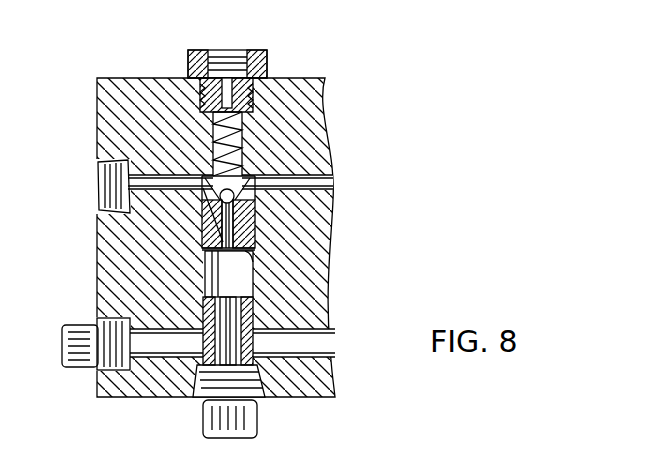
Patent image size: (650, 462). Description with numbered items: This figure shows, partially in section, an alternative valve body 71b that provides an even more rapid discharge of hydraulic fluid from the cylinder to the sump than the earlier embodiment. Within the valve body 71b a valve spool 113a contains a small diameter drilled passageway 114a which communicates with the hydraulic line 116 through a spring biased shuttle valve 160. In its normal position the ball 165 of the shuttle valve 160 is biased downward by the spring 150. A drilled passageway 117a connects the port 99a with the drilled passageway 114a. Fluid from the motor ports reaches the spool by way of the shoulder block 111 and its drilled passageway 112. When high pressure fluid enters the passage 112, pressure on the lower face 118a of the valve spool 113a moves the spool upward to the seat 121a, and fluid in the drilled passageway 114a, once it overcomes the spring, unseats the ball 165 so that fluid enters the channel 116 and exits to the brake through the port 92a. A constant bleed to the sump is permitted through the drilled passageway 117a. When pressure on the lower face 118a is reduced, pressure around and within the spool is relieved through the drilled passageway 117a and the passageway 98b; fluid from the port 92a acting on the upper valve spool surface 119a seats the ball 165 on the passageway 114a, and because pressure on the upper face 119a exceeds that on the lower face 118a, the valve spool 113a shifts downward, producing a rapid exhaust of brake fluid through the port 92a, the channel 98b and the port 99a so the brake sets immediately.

The valve body 71b is at (110, 74).
The upper valve spool surface 119a is at (220, 226).
The threaded port 92a is at (237, 60).
The hydraulic line 116 is at (255, 105).
The seat 121a is at (243, 178).
The spring 150 is at (243, 188).
The ball 165 is at (236, 190).
The valve spool 113a is at (255, 210).
The drilled passageway 114a is at (255, 222).
The lower face of valve spool 118a is at (255, 268).
The drilled passageway 117a is at (203, 205).
The channel 98b is at (160, 188).
The port 99a is at (97, 180).
The shuttle valve 160 is at (203, 188).
The shoulder block 111 is at (203, 330).
The drilled passageway 112 is at (273, 392).